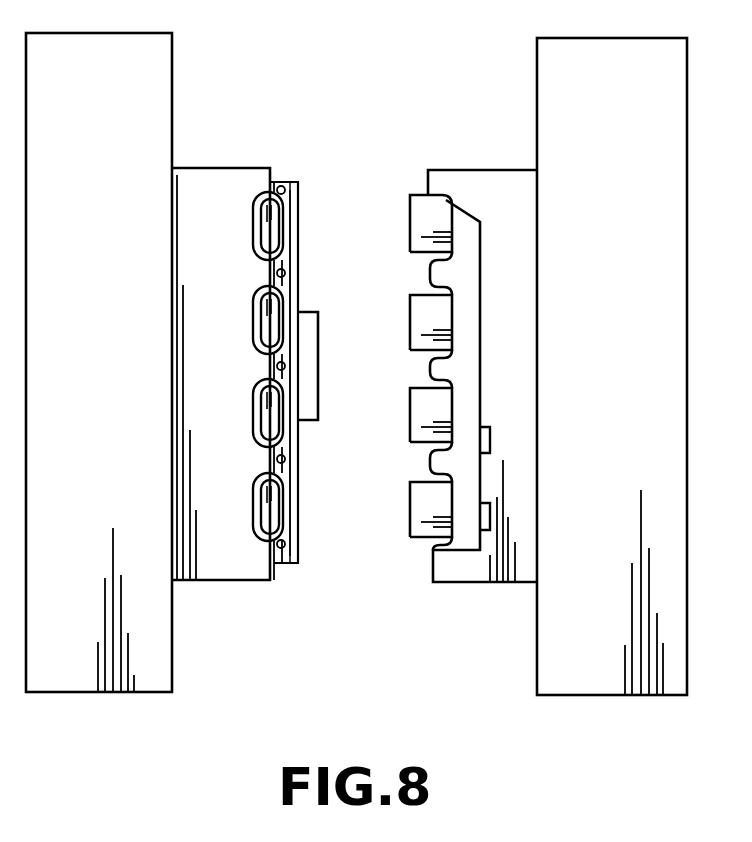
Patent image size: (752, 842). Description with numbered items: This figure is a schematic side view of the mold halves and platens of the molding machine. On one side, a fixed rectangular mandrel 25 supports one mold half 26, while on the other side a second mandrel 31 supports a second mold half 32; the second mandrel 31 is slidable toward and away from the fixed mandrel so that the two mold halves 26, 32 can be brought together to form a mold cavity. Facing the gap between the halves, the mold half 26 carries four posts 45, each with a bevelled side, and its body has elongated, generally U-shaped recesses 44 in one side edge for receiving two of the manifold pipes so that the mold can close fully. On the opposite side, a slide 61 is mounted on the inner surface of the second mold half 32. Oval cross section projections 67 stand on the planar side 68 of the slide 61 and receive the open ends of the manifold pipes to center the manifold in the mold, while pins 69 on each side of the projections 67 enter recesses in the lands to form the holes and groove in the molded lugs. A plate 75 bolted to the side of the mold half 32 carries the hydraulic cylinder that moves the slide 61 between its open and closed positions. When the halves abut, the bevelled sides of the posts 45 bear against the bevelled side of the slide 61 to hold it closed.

The fixed rectangular mandrel 25 is at (620, 697).
The mold half 26 is at (473, 583).
The second mandrel 31 is at (147, 694).
The second mold half 32 is at (243, 582).
The U-shaped recesses 44 is at (493, 512).
The posts 45 is at (415, 222).
The slide 61 is at (298, 525).
The oval cross section projections 67 is at (262, 230).
The planar side 68 is at (289, 255).
The pins 69 is at (287, 186).
The plate 75 is at (311, 368).